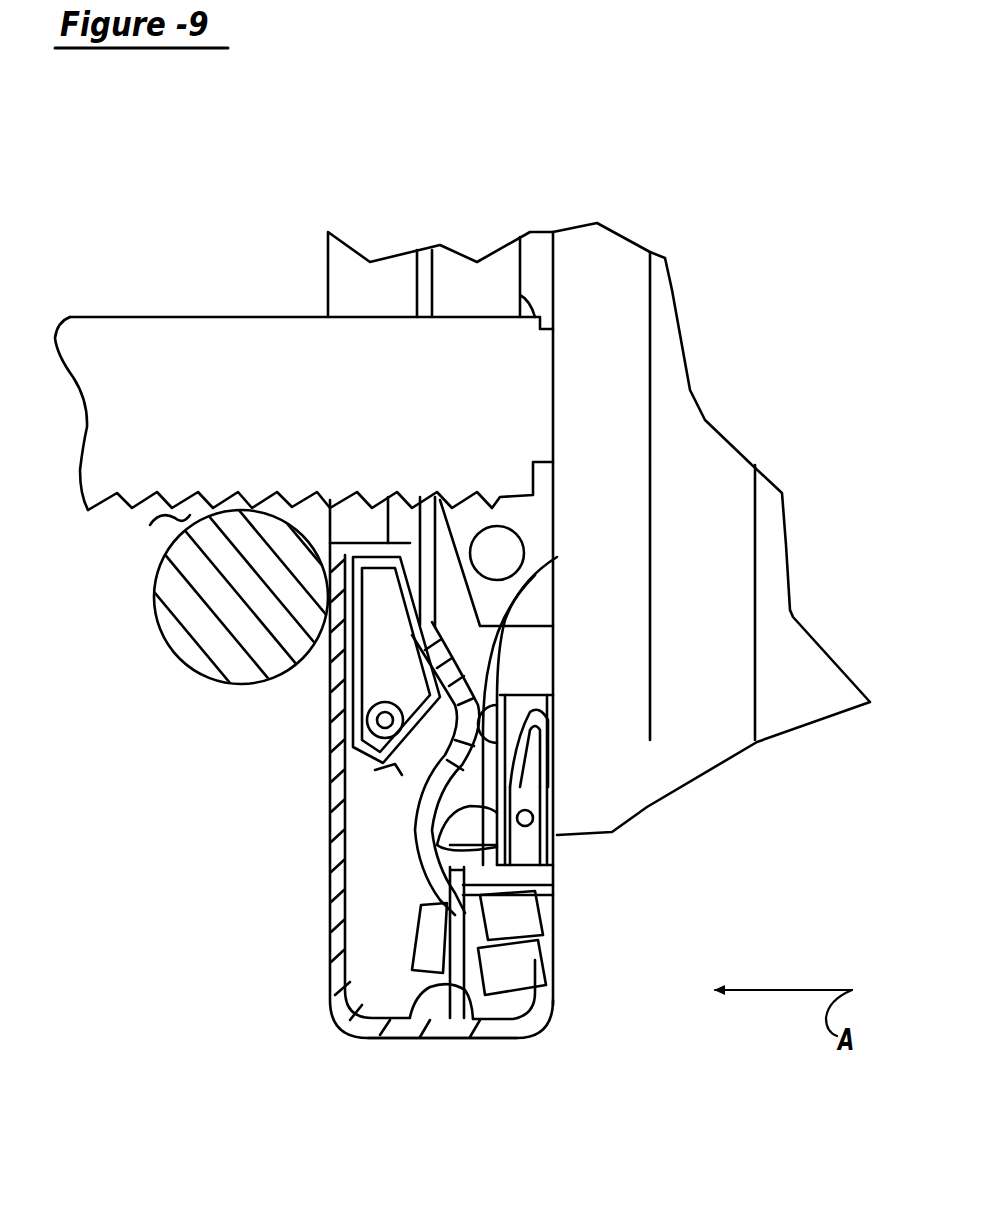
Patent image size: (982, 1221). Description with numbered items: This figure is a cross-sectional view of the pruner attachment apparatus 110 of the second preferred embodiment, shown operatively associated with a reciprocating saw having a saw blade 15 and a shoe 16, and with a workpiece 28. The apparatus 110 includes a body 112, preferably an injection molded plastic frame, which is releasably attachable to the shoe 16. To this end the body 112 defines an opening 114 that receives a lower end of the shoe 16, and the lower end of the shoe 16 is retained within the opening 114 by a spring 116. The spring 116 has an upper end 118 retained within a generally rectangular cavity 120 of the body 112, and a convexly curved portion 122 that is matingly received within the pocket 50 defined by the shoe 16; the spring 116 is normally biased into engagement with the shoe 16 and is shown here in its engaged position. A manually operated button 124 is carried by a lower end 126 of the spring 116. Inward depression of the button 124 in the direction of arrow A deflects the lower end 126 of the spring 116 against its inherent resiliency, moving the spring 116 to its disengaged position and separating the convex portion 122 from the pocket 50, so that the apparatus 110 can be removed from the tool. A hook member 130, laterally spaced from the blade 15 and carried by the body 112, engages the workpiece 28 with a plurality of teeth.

The saw blade 15 is at (133, 338).
The shoe 16 is at (555, 858).
The workpiece 28 is at (183, 608).
The pocket 50 is at (383, 773).
The pruner attachment apparatus 110 is at (285, 890).
The body 112 is at (453, 1050).
The opening 114 is at (555, 690).
The spring 116 is at (400, 824).
The upper end 118 is at (330, 683).
The rectangular cavity 120 is at (388, 520).
The convexly curved portion 122 is at (535, 575).
The manually operated button 124 is at (560, 1003).
The lower end 126 is at (415, 1017).
The hook member 130 is at (150, 525).